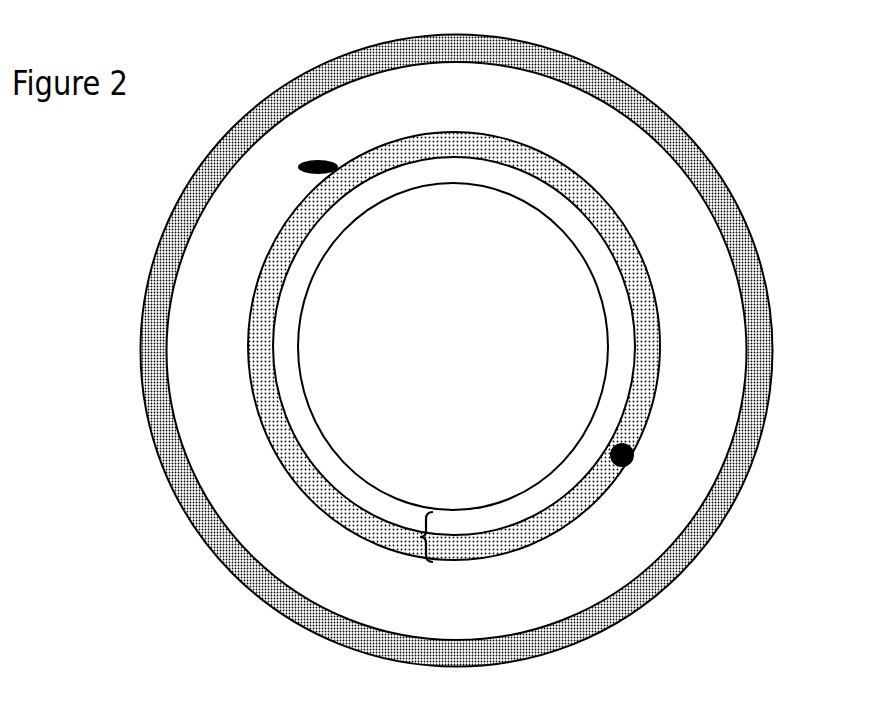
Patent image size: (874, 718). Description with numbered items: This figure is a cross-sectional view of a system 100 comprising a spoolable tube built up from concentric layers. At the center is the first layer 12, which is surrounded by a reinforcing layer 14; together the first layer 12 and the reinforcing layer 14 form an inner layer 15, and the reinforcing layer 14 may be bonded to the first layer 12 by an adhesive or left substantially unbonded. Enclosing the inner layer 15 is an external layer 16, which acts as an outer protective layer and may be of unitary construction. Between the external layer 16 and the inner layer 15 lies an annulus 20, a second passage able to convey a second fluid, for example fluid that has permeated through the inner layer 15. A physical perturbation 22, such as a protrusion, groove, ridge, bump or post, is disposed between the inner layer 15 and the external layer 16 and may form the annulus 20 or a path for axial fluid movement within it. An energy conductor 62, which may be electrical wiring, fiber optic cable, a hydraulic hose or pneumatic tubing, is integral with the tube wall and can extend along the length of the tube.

The system 100 is at (462, 351).
The annulus 20 is at (670, 207).
The external layer 16 is at (752, 240).
The reinforcing layer 14 is at (647, 388).
The first layer 12 is at (603, 432).
The physical perturbation 22 is at (300, 167).
The energy conductor 62 is at (630, 466).
The inner layer 15 is at (423, 548).